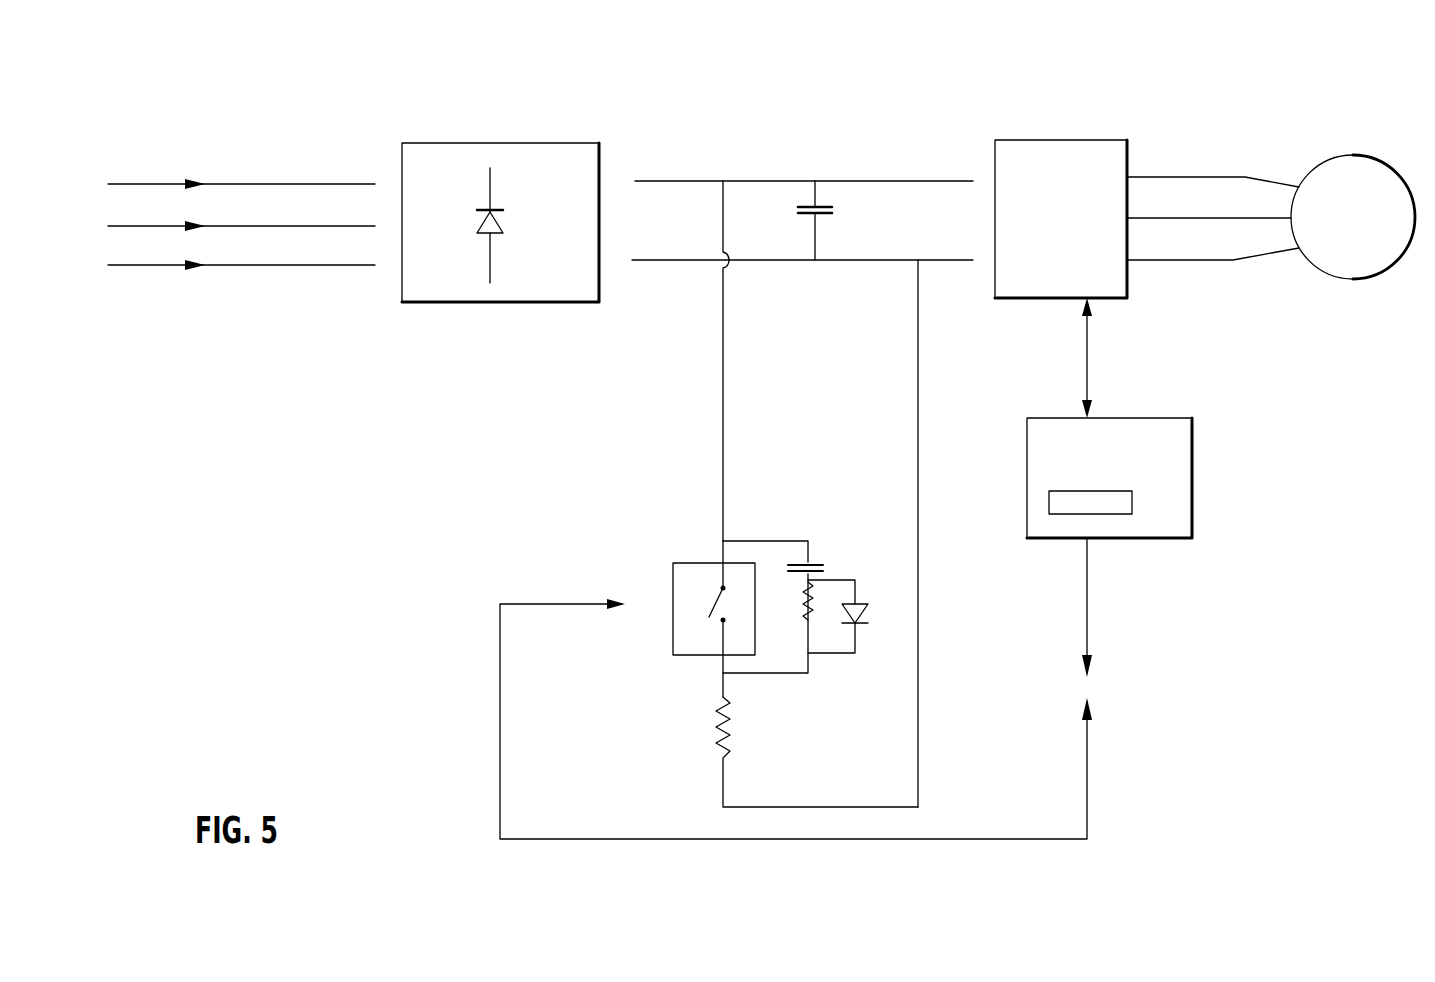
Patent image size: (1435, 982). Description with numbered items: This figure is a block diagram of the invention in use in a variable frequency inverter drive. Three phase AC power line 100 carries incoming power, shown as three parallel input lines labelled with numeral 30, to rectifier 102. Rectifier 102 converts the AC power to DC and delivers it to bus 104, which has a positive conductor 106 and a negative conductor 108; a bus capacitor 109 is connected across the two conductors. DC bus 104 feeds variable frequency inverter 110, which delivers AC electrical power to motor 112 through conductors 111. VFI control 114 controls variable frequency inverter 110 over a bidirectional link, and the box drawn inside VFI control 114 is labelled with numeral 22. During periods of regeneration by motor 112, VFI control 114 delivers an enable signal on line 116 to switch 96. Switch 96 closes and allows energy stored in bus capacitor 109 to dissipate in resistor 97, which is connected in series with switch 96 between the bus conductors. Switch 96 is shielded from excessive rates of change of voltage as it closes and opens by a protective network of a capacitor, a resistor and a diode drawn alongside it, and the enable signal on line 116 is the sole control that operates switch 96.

The three-phase power input lines 30 is at (211, 243).
The three phase AC power line 100 is at (140, 184).
The rectifier 102 is at (488, 137).
The bus 104 is at (723, 152).
The positive conductor 106 is at (906, 179).
The negative conductor 108 is at (940, 262).
The bus capacitor 109 is at (822, 207).
The variable frequency inverter 110 is at (1050, 141).
The conductors 111 is at (1158, 142).
The motor 112 is at (1309, 172).
The VFI control 114 is at (1192, 432).
The controller 22 is at (1145, 510).
The line 116 is at (1093, 630).
The switch 96 is at (652, 593).
The resistor 97 is at (718, 720).